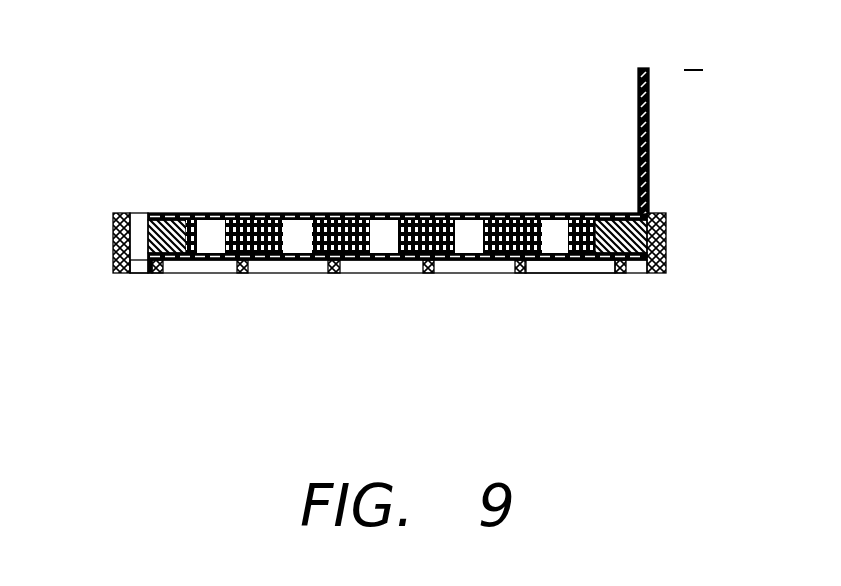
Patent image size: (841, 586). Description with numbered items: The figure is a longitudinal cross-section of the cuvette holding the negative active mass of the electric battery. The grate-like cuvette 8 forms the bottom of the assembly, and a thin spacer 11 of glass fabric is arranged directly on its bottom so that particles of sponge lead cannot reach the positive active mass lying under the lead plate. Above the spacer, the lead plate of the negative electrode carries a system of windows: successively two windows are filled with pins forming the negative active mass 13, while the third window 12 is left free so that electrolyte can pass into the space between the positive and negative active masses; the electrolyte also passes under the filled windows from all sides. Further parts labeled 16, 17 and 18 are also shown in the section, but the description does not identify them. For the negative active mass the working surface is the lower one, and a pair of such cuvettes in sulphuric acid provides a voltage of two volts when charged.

The grate-like cuvette 8 is at (328, 263).
The thin spacer of glass fabric 11 is at (223, 238).
The window 12 is at (471, 237).
The negative active mass 13 is at (272, 214).
The support bar 16 is at (553, 260).
The edge seal 17 is at (186, 213).
The terminal post 18 is at (621, 110).